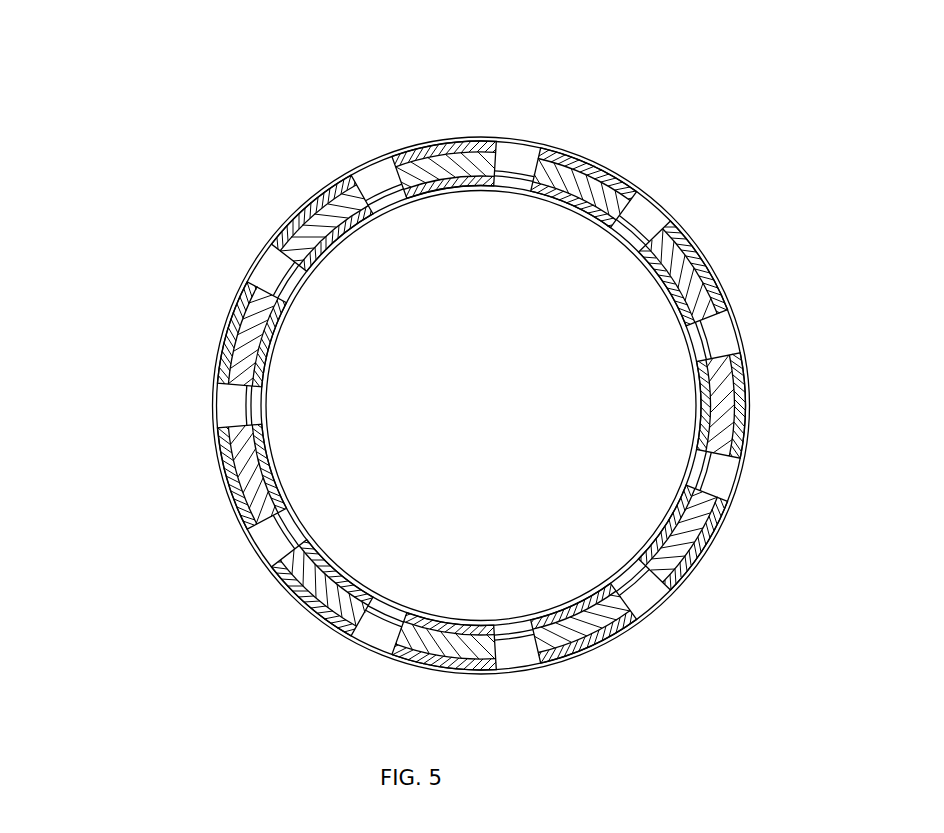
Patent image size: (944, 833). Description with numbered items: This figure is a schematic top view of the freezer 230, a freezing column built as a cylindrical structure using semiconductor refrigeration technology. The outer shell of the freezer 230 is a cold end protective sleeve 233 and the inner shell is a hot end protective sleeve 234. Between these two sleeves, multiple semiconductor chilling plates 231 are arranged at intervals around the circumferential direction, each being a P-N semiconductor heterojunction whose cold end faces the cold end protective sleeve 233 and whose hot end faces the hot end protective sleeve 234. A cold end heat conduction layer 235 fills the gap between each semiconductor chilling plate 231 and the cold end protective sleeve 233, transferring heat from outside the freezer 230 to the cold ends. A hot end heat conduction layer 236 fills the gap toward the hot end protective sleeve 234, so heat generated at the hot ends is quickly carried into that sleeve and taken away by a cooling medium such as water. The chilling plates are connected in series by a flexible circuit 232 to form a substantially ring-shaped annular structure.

The freezer 230 is at (595, 48).
The semiconductor chilling plate 231 is at (253, 338).
The flexible circuit 232 is at (247, 405).
The cold end protective sleeve 233 is at (337, 178).
The hot end protective sleeve 234 is at (403, 193).
The cold end heat conduction layer 235 is at (313, 213).
The hot end heat conduction layer 236 is at (303, 265).